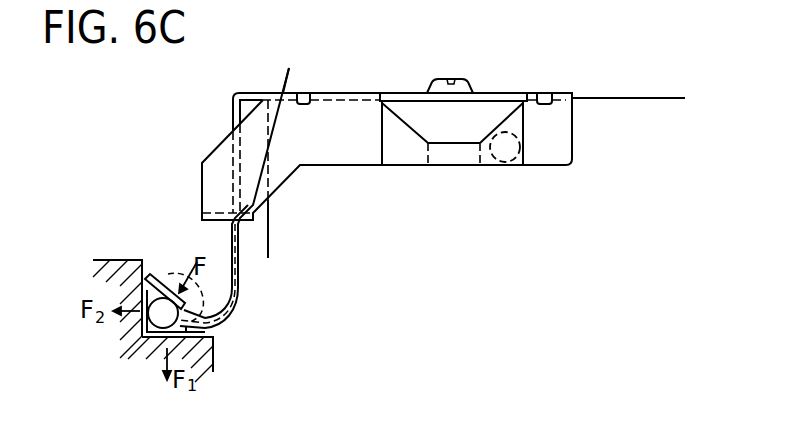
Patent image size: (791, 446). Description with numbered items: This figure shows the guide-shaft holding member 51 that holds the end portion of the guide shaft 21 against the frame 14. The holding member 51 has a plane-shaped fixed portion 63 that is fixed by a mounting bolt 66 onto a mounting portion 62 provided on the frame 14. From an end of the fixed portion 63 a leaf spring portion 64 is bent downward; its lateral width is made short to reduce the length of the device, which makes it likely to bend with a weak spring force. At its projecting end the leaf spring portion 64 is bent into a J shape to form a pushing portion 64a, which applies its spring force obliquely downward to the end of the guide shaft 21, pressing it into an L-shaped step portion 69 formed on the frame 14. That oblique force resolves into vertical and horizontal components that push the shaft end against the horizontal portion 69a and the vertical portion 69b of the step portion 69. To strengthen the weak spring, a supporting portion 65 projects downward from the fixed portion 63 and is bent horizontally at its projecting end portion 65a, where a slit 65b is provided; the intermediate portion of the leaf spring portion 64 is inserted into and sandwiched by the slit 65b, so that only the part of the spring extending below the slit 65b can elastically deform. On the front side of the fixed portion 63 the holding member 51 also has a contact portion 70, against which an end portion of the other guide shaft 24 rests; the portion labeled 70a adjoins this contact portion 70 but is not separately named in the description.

The frame 14 is at (108, 260).
The guide shaft 21 is at (156, 367).
The other guide shaft 24 is at (515, 162).
The guide-shaft holding member 51 is at (352, 86).
The mounting portion 62 is at (605, 96).
The fixed portion 63 is at (377, 93).
The leaf spring portion 64 is at (238, 250).
The pushing portion 64a is at (170, 272).
The supporting portion 65 is at (330, 140).
The projecting end portion 65a is at (257, 215).
The slit 65b is at (292, 65).
The mounting bolt 66 is at (476, 81).
The step portion 69 is at (213, 348).
The horizontal portion 69a is at (237, 318).
The vertical portion 69b is at (148, 272).
The contact portion 70 is at (464, 155).
The inclined side wall 70a is at (512, 132).